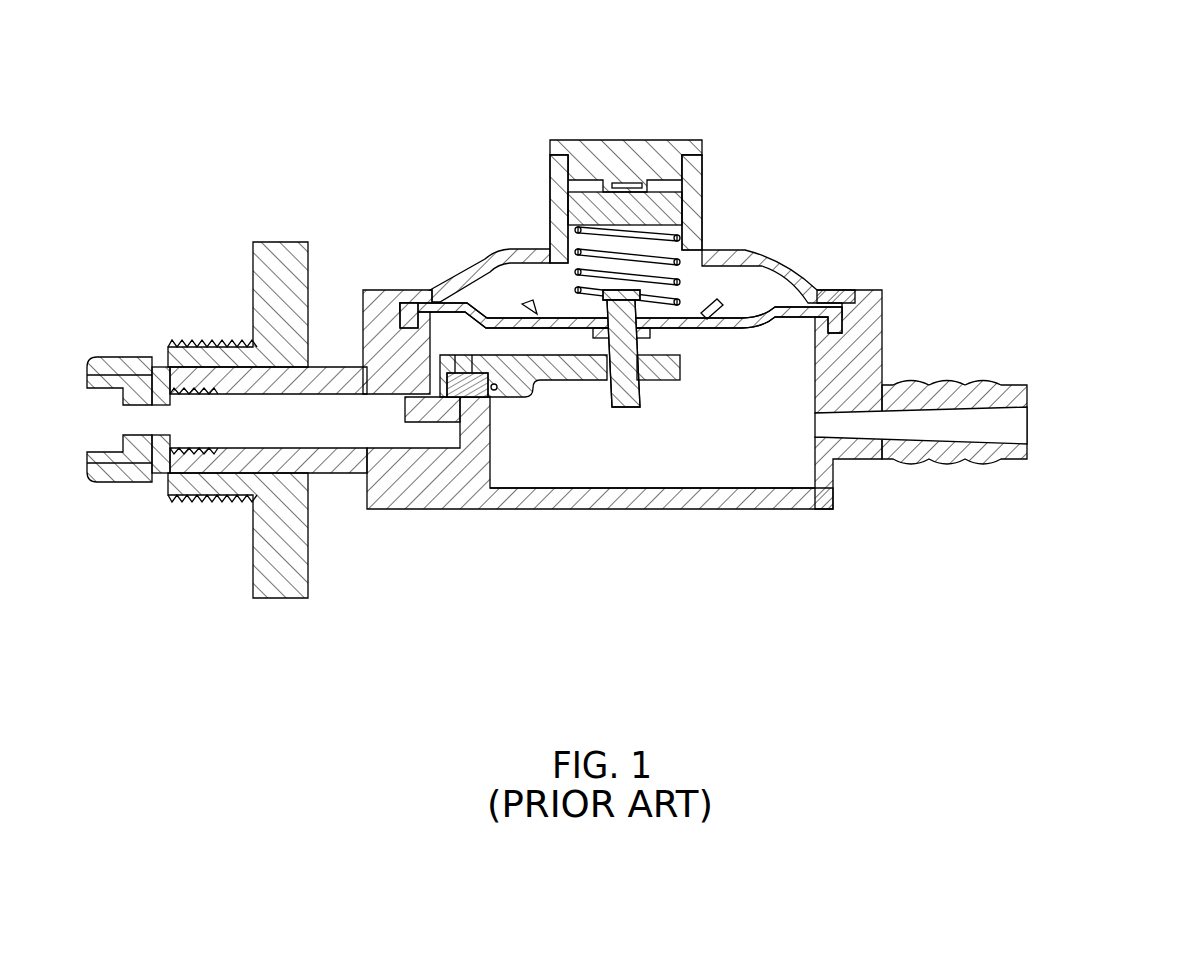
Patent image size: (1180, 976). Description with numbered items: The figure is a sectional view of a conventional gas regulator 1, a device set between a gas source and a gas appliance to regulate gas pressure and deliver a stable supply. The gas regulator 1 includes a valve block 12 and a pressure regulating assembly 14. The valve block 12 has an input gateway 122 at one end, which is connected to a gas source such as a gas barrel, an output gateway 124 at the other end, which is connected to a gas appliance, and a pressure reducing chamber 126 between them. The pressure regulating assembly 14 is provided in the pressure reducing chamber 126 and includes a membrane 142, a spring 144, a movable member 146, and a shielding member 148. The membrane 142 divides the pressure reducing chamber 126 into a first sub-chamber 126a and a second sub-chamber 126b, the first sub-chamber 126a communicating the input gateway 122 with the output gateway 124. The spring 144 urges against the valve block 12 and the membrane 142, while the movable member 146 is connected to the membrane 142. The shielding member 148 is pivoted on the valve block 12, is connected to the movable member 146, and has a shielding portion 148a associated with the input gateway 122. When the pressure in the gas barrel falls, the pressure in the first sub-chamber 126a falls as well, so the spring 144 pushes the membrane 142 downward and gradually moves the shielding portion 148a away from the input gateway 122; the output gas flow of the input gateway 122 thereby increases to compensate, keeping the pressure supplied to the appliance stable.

The gas regulator 1 is at (623, 332).
The valve block 12 is at (886, 325).
The pressure regulating assembly 14 is at (542, 290).
The input gateway 122 is at (330, 430).
The output gateway 124 is at (1002, 425).
The pressure reducing chamber 126 is at (692, 291).
The first sub-chamber 126a is at (788, 345).
The second sub-chamber 126b is at (747, 287).
The membrane 142 is at (505, 317).
The spring 144 is at (647, 255).
The movable member 146 is at (628, 397).
The shielding member 148 is at (560, 498).
The shielding portion 148a is at (470, 397).